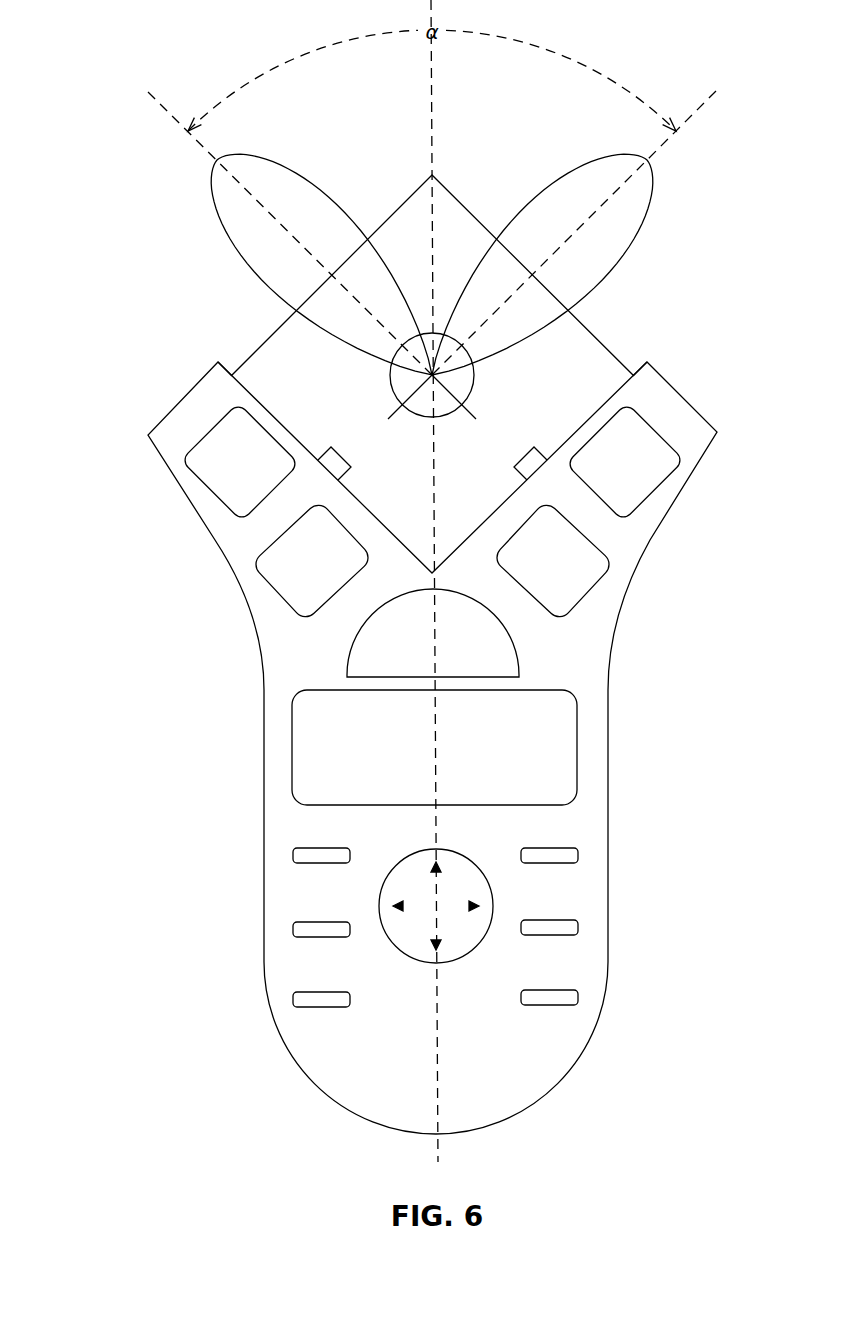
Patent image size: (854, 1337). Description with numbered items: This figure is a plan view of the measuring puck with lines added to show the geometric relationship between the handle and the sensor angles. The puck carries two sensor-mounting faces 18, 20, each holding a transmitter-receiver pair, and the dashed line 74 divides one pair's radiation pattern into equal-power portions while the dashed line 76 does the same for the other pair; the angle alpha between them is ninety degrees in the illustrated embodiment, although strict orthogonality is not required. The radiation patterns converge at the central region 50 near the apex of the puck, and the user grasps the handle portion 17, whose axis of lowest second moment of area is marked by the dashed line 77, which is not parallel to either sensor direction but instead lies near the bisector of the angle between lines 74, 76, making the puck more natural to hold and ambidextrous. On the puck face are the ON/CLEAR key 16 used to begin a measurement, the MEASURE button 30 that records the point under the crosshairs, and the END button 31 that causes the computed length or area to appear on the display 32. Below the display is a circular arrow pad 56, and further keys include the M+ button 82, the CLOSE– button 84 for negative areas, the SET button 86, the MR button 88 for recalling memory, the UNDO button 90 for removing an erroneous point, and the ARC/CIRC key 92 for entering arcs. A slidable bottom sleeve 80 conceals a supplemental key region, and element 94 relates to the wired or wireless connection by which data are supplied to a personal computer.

The ON/CLEAR key 16 is at (663, 427).
The handle portion 17 is at (676, 718).
The sensor-mounting face 18 is at (570, 438).
The sensor-mounting face 20 is at (573, 315).
The MEASURE button 30 is at (518, 652).
The END button 31 is at (182, 463).
The display 32 is at (292, 750).
The transducer / sensor 50 is at (345, 448).
The navigation button 56 is at (435, 840).
The dashed line 74 is at (202, 148).
The dashed line 76 is at (662, 146).
The handle axis 77 is at (437, 1032).
The slidable bottom sleeve 80 is at (607, 553).
The M+ button 82 is at (323, 1008).
The CLOSE– button 84 is at (268, 592).
The SET button 86 is at (323, 938).
The MR button 88 is at (563, 1006).
The UNDO button 90 is at (323, 864).
The ARC/CIRC key 92 is at (563, 936).
The wired or wireless connection block 94 is at (563, 864).